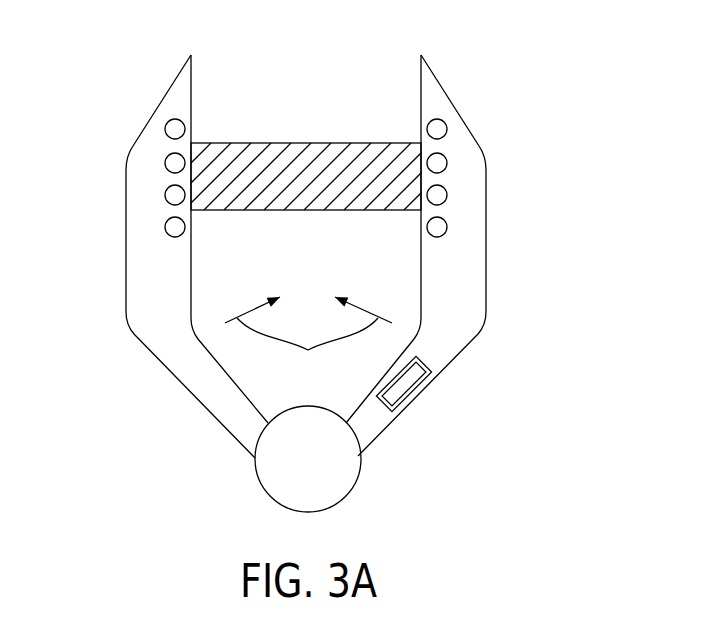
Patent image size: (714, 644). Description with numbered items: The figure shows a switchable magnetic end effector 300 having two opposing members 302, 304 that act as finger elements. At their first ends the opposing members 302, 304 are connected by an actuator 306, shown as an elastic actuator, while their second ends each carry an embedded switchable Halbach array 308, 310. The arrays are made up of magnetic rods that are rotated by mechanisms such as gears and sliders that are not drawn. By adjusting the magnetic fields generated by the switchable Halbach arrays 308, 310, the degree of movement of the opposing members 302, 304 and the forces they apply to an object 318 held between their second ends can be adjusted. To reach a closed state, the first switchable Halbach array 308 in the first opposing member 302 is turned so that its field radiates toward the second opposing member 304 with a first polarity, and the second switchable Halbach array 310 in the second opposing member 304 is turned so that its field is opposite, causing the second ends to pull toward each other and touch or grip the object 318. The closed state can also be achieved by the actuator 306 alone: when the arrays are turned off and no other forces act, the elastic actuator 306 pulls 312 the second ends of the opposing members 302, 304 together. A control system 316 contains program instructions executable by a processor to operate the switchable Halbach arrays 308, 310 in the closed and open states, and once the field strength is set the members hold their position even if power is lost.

The end effector 300 is at (118, 74).
The first opposing member 302 is at (148, 275).
The second opposing member 304 is at (463, 275).
The actuator 306 is at (348, 468).
The first switchable Halbach array 308 is at (200, 112).
The second switchable Halbach array 310 is at (413, 112).
The pulling action 312 is at (308, 340).
The control system 316 is at (408, 382).
The object 318 is at (295, 190).